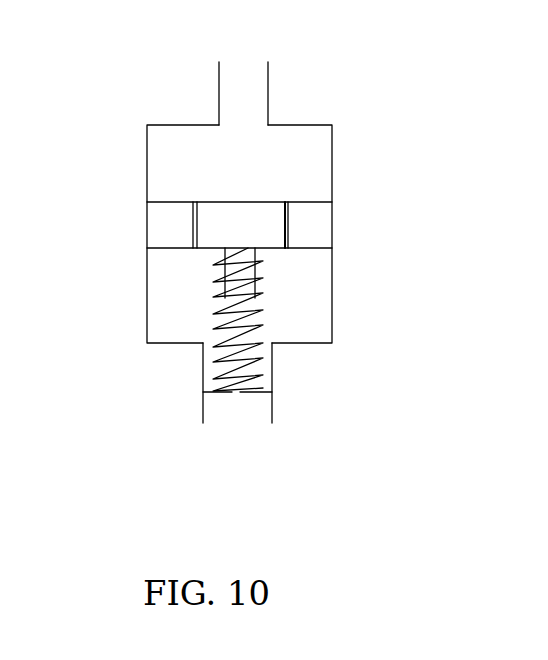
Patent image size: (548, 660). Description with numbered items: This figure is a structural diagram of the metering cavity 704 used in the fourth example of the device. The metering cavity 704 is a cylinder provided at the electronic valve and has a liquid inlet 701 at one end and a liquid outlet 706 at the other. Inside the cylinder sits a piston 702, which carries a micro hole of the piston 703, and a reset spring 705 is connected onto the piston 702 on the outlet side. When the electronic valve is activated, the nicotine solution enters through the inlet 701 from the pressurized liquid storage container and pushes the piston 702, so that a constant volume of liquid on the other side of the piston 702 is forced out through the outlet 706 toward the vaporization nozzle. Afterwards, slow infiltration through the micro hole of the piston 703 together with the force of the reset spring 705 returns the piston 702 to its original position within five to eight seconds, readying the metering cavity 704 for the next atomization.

The inlet 701 is at (238, 95).
The piston 702 is at (175, 232).
The micro hole of the piston 703 is at (292, 232).
The metering cavity 704 is at (310, 312).
The reset spring 705 is at (230, 330).
The outlet 706 is at (238, 407).